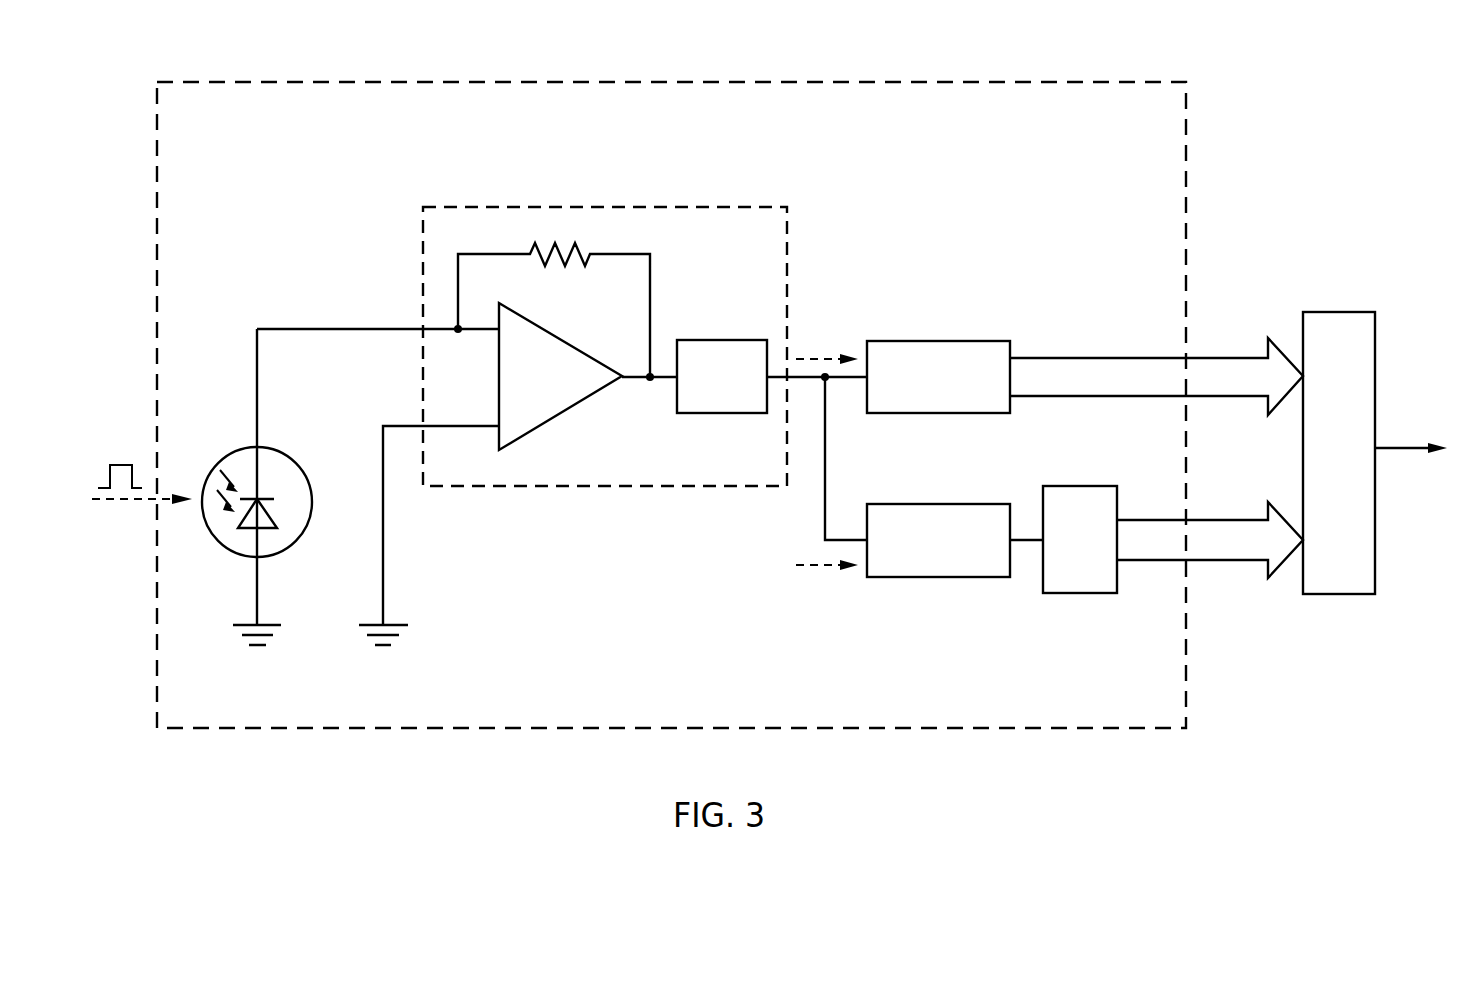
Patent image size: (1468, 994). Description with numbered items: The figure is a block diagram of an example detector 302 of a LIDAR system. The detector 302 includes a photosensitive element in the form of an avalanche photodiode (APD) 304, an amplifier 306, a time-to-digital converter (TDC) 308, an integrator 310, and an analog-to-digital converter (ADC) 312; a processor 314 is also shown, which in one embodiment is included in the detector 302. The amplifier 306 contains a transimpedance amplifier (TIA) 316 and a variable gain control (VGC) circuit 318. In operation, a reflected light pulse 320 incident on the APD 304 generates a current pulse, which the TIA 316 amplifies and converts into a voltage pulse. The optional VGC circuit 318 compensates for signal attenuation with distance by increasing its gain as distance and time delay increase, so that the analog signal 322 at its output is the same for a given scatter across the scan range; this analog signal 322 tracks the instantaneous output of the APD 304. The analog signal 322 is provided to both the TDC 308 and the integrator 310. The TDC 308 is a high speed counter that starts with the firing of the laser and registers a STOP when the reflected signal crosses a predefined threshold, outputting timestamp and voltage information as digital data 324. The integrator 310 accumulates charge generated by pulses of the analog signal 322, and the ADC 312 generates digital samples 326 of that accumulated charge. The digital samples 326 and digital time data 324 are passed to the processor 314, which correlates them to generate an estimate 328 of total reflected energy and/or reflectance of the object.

The detector 302 is at (680, 82).
The avalanche photodiode (APD) 304 is at (237, 450).
The amplifier 306 is at (620, 207).
The time-to-digital converter (TDC) 308 is at (937, 341).
The integrator 310 is at (937, 504).
The analog-to-digital converter (ADC) 312 is at (1080, 486).
The processor 314 is at (1340, 312).
The transimpedance amplifier (TIA) 316 is at (541, 321).
The variable gain control (VGC) circuit 318 is at (710, 340).
The reflected light pulse 320 is at (142, 501).
The analog signal 322 is at (814, 362).
The digital data 324 is at (1112, 358).
The digital samples 326 is at (1195, 520).
The estimate 328 is at (1395, 448).